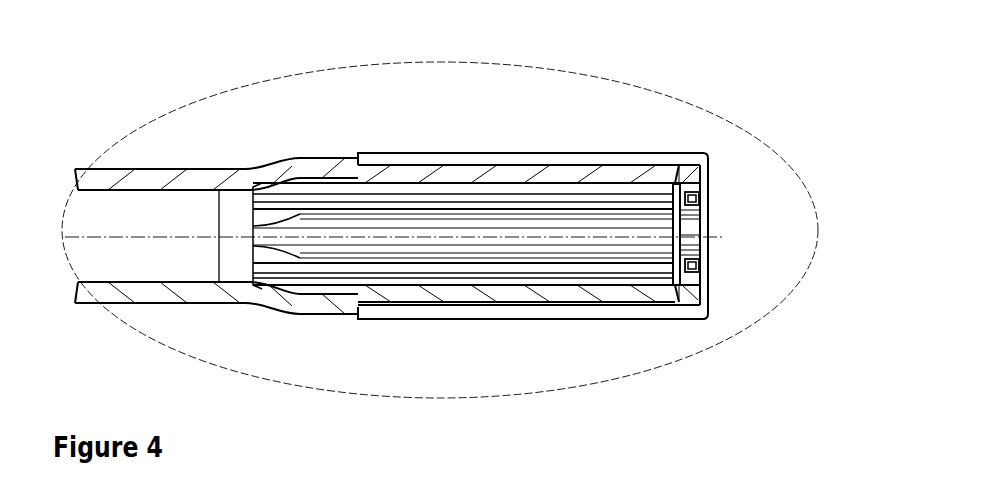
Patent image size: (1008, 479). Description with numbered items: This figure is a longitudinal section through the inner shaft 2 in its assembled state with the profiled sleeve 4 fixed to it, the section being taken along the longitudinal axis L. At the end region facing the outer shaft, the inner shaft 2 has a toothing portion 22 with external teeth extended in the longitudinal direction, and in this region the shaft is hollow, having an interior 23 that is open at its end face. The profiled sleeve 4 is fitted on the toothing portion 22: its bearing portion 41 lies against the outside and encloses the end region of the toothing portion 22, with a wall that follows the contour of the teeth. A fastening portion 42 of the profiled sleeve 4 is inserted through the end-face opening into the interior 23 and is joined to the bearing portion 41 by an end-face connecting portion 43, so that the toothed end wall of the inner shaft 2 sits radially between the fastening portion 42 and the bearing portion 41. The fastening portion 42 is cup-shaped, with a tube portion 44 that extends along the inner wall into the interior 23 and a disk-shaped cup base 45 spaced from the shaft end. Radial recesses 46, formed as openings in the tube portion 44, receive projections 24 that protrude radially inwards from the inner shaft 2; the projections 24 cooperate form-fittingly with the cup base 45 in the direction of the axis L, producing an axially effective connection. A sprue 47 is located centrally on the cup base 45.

The inner shaft 2 is at (125, 178).
The toothing portion 22 is at (322, 163).
The profiled sleeve 4 is at (526, 158).
The bearing portion 41 is at (595, 230).
The interior 23 is at (600, 185).
The cup base 45 is at (640, 195).
The tube portion 44 is at (688, 158).
The connecting portion 43 is at (712, 158).
The fastening portion 42 is at (710, 248).
The projections 24 is at (710, 255).
The radial recesses 46 is at (710, 265).
The sprue 47 is at (664, 205).
The longitudinal axis L is at (138, 237).